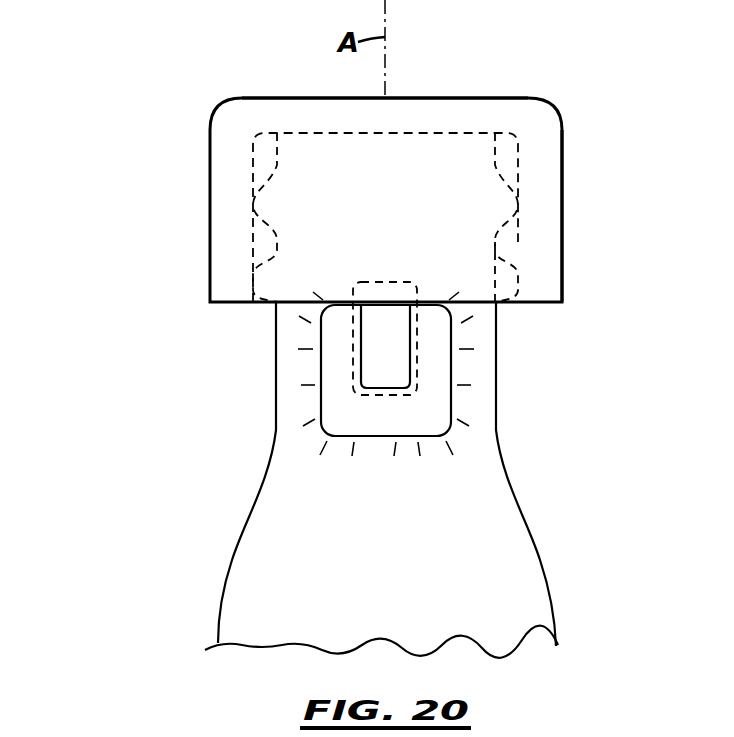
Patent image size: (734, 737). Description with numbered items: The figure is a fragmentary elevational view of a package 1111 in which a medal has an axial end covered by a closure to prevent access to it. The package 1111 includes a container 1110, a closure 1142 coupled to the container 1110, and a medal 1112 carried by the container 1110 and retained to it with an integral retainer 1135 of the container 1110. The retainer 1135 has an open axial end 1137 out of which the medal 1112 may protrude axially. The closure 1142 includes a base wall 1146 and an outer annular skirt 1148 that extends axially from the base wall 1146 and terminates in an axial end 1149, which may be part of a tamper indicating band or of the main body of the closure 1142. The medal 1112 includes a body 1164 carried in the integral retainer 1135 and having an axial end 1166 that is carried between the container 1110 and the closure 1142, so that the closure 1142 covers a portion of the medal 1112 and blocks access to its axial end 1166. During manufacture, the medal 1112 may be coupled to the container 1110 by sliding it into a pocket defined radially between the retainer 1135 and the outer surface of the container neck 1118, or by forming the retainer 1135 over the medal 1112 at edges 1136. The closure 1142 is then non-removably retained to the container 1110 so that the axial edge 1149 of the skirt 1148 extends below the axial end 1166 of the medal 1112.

The container 1110 is at (342, 480).
The package 1111 is at (460, 196).
The medal 1112 is at (378, 352).
The container neck 1118 is at (263, 418).
The integral retainer 1135 is at (459, 437).
The edges 1136 is at (410, 348).
The open axial end 1137 is at (337, 322).
The closure 1142 is at (557, 90).
The base wall 1146 is at (456, 97).
The outer annular skirt 1148 is at (562, 183).
The axial end 1149 is at (512, 305).
The body 1164 is at (380, 375).
The axial end 1166 is at (388, 285).